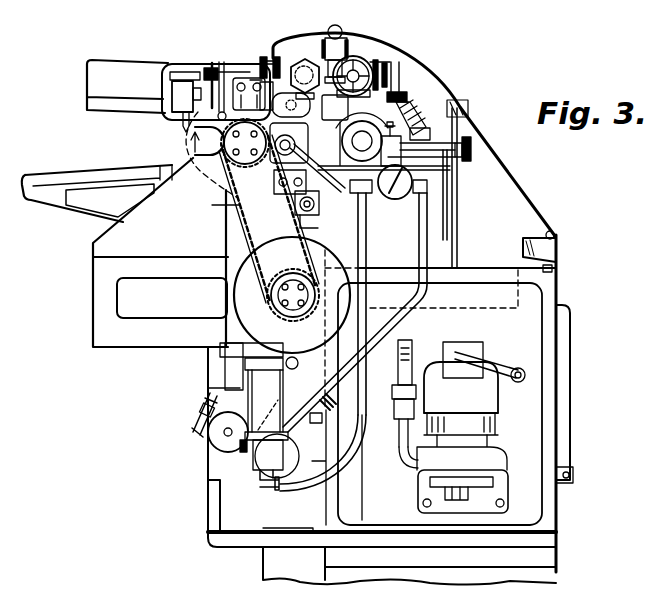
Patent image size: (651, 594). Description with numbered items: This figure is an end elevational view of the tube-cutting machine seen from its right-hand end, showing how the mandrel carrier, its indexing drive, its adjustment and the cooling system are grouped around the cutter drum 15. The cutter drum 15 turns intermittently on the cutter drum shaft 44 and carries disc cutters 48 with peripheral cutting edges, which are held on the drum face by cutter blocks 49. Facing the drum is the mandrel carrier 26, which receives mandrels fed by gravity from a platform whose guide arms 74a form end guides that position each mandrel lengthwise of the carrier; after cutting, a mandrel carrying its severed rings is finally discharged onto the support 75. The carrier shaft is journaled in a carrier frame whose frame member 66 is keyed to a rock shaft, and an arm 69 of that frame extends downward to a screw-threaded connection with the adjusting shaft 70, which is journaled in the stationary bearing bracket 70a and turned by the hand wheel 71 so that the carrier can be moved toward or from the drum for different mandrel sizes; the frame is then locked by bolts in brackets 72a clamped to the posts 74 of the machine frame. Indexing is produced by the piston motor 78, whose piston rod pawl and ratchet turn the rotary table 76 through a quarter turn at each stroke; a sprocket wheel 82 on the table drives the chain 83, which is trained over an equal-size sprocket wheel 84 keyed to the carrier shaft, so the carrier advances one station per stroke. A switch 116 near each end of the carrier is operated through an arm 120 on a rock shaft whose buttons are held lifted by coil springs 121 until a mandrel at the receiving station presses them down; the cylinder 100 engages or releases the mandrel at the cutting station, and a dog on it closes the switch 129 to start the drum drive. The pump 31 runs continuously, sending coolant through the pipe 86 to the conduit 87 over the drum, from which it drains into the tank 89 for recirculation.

The guide arm 74a is at (158, 52).
The switch 116 is at (174, 91).
The coil spring 121 is at (212, 66).
The arm 120 is at (225, 72).
The mandrel carrier 26 is at (181, 153).
The cylinder 100 is at (245, 143).
The sprocket wheel 84 is at (212, 155).
The support 75 is at (103, 170).
The chain 83 is at (240, 238).
The frame member 66 is at (217, 208).
The rotary table 76 is at (305, 336).
The sprocket wheel 82 is at (278, 276).
The conduit 87 is at (278, 56).
The post 74 is at (307, 54).
The pipe 86 is at (395, 66).
The bracket 72a is at (335, 107).
The cutter drum shaft 44 is at (380, 117).
The cutter block 49 is at (410, 93).
The cutter disc 48 is at (417, 102).
The cutter drum 15 is at (426, 119).
The switch 129 is at (318, 203).
The arm 69 is at (230, 385).
The piston motor 78 is at (272, 408).
The bearing bracket 70a is at (286, 438).
The adjusting shaft 70 is at (208, 440).
The hand wheel 71 is at (193, 428).
The tank 89 is at (512, 339).
The pump 31 is at (498, 404).